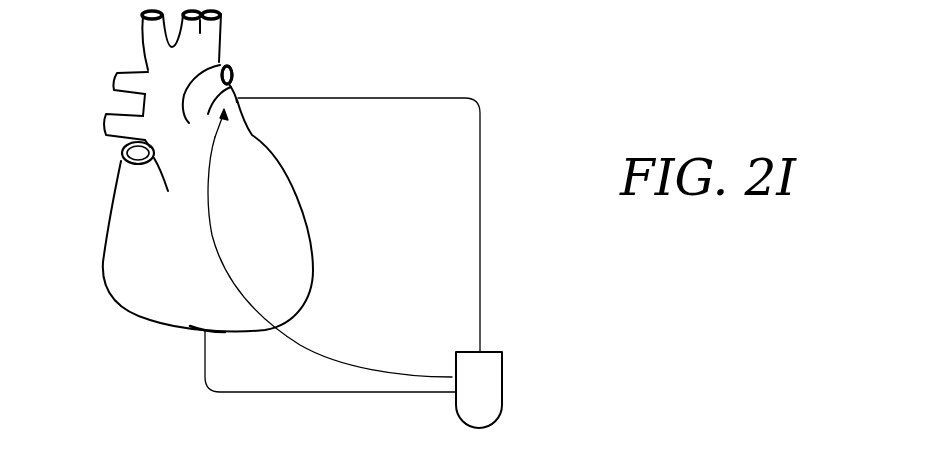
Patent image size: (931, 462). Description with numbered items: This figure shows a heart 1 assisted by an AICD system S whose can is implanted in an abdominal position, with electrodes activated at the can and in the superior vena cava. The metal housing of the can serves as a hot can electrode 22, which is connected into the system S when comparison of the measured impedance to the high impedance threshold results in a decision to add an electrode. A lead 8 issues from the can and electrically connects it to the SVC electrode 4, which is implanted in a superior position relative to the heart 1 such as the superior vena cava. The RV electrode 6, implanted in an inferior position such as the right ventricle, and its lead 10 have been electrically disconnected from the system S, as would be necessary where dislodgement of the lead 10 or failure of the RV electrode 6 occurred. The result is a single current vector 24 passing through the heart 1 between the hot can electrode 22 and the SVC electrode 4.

The heart 1 is at (78, 175).
The SVC electrode 4 is at (236, 88).
The RV electrode 6 is at (197, 326).
The lead 8 is at (363, 98).
The lead 10 is at (258, 393).
The hot can electrode 22 is at (503, 377).
The current path 24 is at (217, 240).
The AICD system S is at (340, 402).